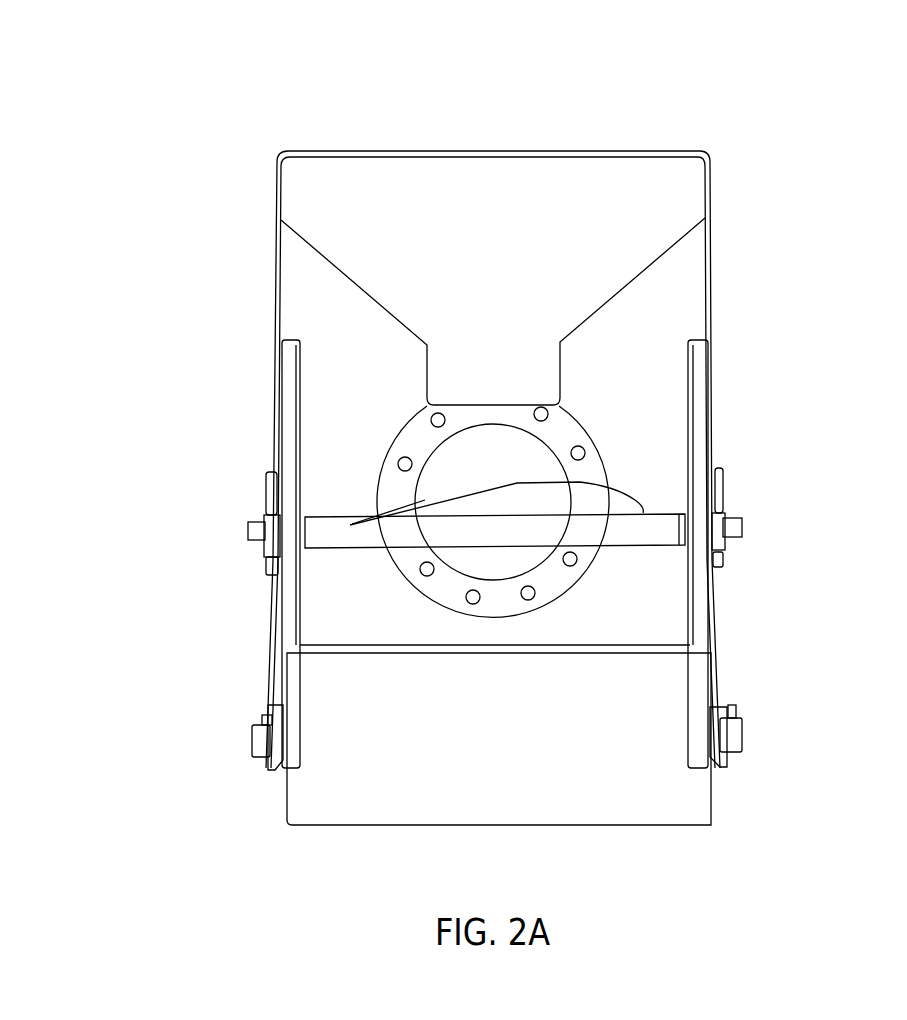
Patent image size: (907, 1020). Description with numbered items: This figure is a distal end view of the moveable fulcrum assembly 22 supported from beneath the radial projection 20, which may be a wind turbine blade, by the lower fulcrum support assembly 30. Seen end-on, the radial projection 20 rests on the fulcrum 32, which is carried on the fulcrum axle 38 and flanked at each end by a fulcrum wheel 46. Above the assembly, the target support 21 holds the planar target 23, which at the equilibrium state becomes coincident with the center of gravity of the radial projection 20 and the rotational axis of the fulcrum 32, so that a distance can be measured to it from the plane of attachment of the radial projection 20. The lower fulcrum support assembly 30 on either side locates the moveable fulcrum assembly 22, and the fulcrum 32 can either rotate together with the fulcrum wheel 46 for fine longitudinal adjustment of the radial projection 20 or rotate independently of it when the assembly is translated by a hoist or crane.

The radial projection 20 is at (500, 475).
The target support 21 is at (706, 246).
The moveable fulcrum assembly 22 is at (343, 502).
The planar target 23 is at (543, 220).
The lower fulcrum support assembly 30 is at (258, 673).
The fulcrum 32 is at (648, 527).
The fulcrum axle 38 is at (262, 533).
The fulcrum wheel 46 is at (290, 520).